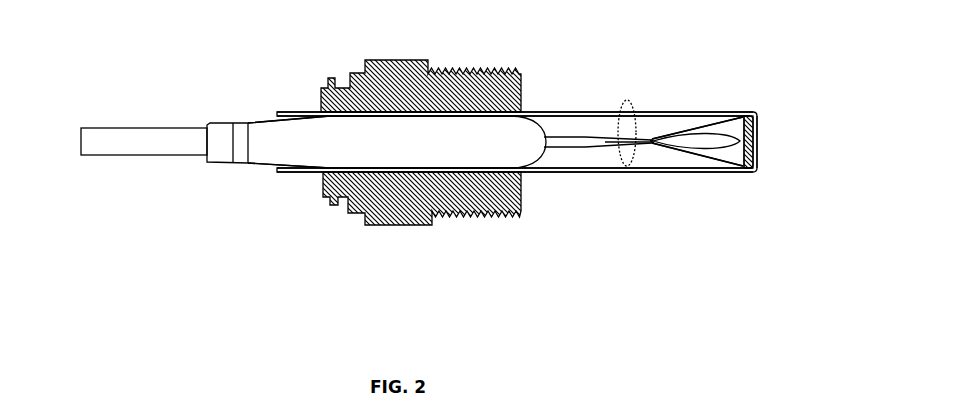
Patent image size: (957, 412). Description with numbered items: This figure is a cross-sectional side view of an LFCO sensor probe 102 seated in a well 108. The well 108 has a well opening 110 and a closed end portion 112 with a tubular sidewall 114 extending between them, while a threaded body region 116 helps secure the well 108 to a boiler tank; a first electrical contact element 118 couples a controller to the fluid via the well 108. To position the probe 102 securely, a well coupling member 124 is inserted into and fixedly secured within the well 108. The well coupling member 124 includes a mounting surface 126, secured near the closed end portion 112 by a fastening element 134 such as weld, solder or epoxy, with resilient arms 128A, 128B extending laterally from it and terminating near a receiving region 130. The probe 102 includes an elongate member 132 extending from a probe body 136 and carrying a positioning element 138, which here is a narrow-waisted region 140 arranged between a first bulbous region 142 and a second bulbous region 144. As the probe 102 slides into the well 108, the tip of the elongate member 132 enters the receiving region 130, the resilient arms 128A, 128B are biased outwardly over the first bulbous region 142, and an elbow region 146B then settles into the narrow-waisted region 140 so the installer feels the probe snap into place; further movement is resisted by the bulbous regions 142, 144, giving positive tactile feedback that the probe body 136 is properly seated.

The LFCO sensor probe 102 is at (174, 108).
The well 108 is at (776, 70).
The well opening 110 is at (274, 117).
The closed end portion 112 is at (766, 160).
The tubular sidewall 114 is at (545, 112).
The threaded body region 116 is at (420, 80).
The first electrical contact element 118 is at (751, 186).
The well coupling member 124 is at (724, 117).
The mounting surface 126 is at (753, 122).
The resilient arm 128A is at (707, 123).
The resilient arm 128B is at (717, 163).
The receiving region 130 is at (624, 108).
The elongate member 132 is at (580, 150).
The fastening element 134 is at (752, 143).
The probe body 136 is at (415, 150).
The positioning element 138 is at (648, 128).
The narrow-waisted region 140 is at (650, 147).
The first bulbous region 142 is at (748, 173).
The second bulbous region 144 is at (610, 142).
The elbow region 146B is at (654, 138).